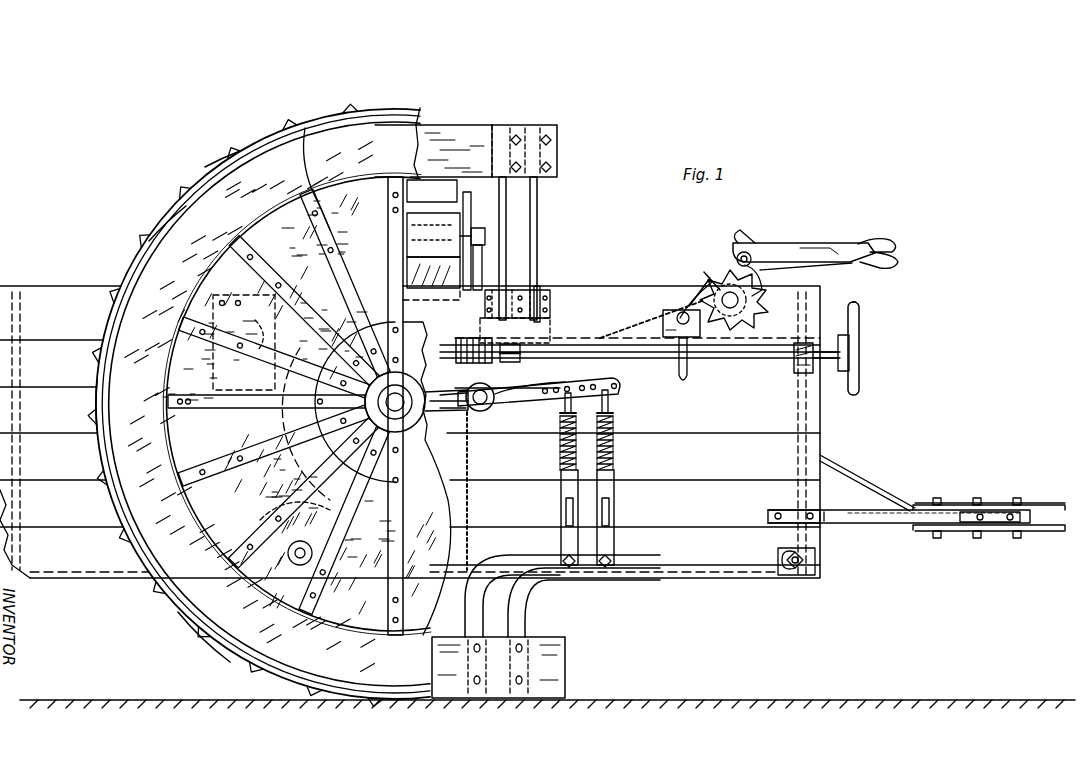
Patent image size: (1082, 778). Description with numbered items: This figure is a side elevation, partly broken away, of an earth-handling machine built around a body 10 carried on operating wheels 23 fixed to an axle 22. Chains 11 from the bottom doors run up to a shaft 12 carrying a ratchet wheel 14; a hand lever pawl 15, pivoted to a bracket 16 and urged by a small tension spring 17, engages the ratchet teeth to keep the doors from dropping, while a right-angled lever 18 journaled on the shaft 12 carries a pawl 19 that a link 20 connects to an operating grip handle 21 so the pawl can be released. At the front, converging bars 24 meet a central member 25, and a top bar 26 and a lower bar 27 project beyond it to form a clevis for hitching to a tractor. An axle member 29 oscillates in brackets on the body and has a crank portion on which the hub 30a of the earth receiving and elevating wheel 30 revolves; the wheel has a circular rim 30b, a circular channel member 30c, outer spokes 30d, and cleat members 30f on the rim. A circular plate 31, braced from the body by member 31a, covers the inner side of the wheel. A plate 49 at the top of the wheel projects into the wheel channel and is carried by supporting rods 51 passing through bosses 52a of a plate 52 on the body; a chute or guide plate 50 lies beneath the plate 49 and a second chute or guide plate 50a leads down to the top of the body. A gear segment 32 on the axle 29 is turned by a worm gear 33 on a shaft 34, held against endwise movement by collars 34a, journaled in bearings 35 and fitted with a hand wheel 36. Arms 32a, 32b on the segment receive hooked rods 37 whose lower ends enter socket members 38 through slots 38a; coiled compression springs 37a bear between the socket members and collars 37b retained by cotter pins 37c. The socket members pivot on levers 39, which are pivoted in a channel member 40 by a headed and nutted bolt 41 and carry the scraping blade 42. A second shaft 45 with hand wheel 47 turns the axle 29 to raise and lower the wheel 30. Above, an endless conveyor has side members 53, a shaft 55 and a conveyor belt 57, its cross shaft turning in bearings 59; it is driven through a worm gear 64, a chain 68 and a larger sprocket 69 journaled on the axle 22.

The body 10 is at (724, 548).
The chains 11 is at (483, 491).
The shaft 12 is at (757, 310).
The ratchet wheel 14 is at (762, 290).
The hand lever pawl 15 is at (700, 290).
The bracket 16 is at (672, 300).
The tension spring 17 is at (665, 312).
The lever 18 is at (816, 242).
The pawl 19 is at (750, 256).
The link 20 is at (850, 268).
The operating grip handle 21 is at (884, 268).
The axle 22 is at (300, 545).
The operating wheels 23 is at (185, 648).
The converging bars 24 is at (893, 520).
The central member 25 is at (848, 525).
The top bar 26 is at (893, 494).
The lower bar 27 is at (995, 532).
The axle member 29 is at (449, 405).
The earth receiving and elevating wheel 30 is at (108, 490).
The hub 30a is at (385, 378).
The circular rim 30b is at (221, 165).
The circular channel member 30c is at (172, 220).
The outer spokes 30d is at (238, 478).
The cleat members 30f is at (96, 404).
The plate 31 is at (305, 130).
The member 31a is at (182, 325).
The gear segment 32 is at (452, 392).
The arm 32a is at (504, 416).
The arm 32b is at (620, 390).
The worm gear 33 is at (470, 342).
The shaft 34 is at (655, 358).
The collars 34a is at (548, 325).
The bearings 35 is at (793, 360).
The hand wheel 36 is at (862, 366).
The rods 37 is at (612, 440).
The coiled compression springs 37a is at (614, 460).
The collars 37b is at (560, 450).
The cotter pins 37c is at (560, 408).
The socket members 38 is at (614, 488).
The slots 38a is at (566, 516).
The bars or levers 39 is at (518, 602).
The channel member 40 is at (792, 570).
The headed and nutted bolt 41 is at (806, 578).
The scraping member or blade 42 is at (566, 645).
The shaft 45 is at (838, 342).
The hand wheel 47 is at (862, 310).
The plate 49 is at (458, 138).
The chute or guide plate 50 is at (432, 191).
The chute or guide plate 50a is at (433, 272).
The supporting rods 51 is at (535, 200).
The plate 52 is at (552, 303).
The bosses 52a is at (540, 292).
The longitudinally extending members 53 is at (470, 215).
The shaft 55 is at (490, 238).
The conveyor belt 57 is at (433, 231).
The bearings 59 is at (482, 262).
The worm gear 64 is at (300, 210).
The chain 68 is at (244, 342).
The larger sprocket 69 is at (326, 578).